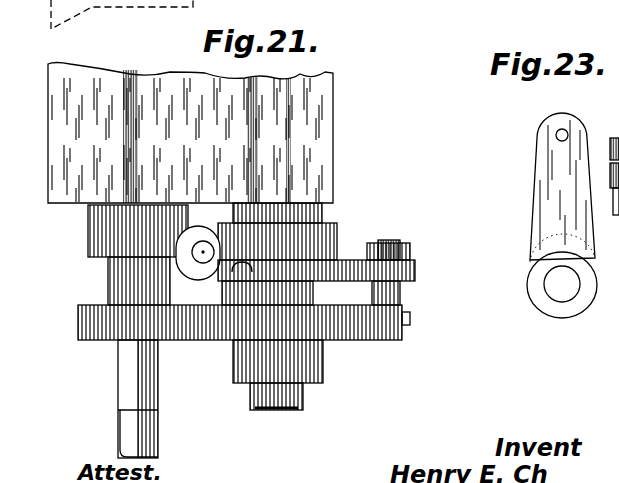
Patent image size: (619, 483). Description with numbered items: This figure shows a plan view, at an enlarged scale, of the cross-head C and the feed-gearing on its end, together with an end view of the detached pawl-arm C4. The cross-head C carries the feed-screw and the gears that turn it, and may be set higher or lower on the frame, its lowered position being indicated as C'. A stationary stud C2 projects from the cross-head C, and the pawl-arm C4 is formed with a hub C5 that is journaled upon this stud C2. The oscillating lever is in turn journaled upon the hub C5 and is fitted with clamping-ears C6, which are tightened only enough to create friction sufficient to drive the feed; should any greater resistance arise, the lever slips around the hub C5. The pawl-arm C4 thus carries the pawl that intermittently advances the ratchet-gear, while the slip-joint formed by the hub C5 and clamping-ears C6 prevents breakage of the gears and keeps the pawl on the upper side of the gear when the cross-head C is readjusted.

In FIG. 21, the cross-head C is at (190, 261).
In FIG. 21, the cross-head in lower position C' is at (244, 287).
In FIG. 21, the stationary stud C2 is at (415, 272).
In FIG. 21, the hub C5 is at (314, 293).
In FIG. 23, the hub C5 is at (558, 255).
In FIG. 21, the clamping-ears C6 is at (201, 263).
In FIG. 23, the pawl-arm C4 is at (532, 192).